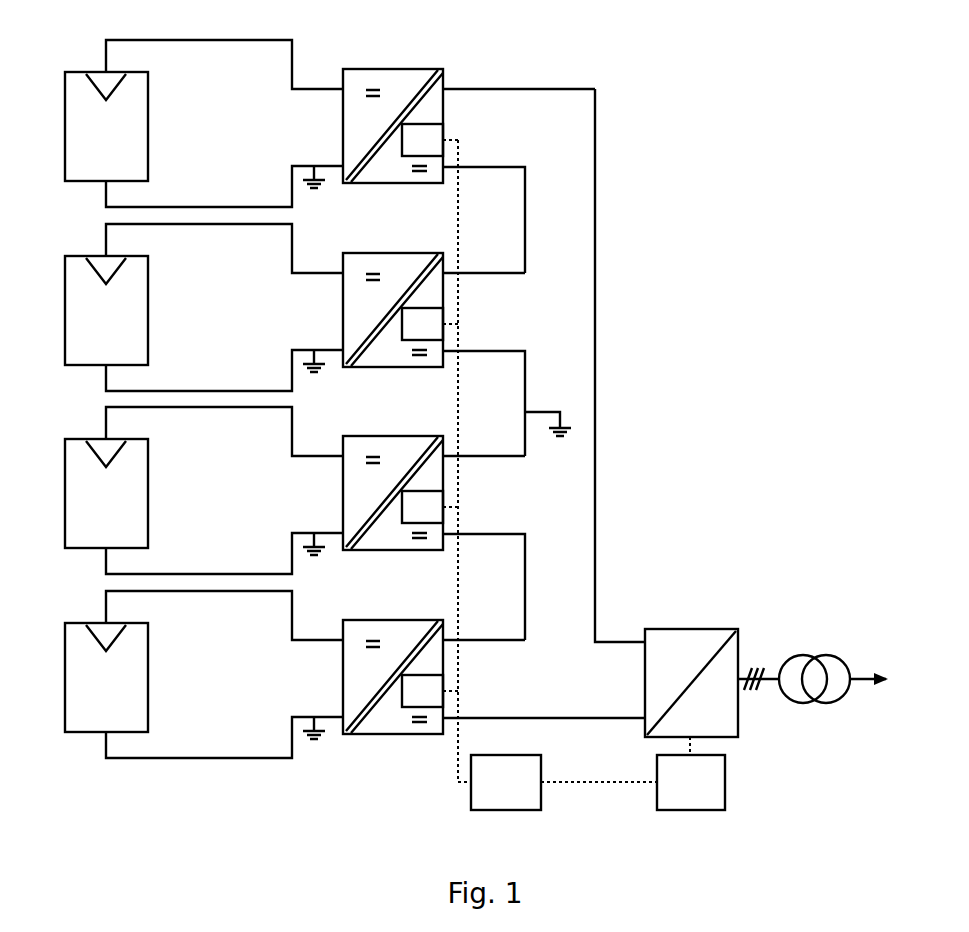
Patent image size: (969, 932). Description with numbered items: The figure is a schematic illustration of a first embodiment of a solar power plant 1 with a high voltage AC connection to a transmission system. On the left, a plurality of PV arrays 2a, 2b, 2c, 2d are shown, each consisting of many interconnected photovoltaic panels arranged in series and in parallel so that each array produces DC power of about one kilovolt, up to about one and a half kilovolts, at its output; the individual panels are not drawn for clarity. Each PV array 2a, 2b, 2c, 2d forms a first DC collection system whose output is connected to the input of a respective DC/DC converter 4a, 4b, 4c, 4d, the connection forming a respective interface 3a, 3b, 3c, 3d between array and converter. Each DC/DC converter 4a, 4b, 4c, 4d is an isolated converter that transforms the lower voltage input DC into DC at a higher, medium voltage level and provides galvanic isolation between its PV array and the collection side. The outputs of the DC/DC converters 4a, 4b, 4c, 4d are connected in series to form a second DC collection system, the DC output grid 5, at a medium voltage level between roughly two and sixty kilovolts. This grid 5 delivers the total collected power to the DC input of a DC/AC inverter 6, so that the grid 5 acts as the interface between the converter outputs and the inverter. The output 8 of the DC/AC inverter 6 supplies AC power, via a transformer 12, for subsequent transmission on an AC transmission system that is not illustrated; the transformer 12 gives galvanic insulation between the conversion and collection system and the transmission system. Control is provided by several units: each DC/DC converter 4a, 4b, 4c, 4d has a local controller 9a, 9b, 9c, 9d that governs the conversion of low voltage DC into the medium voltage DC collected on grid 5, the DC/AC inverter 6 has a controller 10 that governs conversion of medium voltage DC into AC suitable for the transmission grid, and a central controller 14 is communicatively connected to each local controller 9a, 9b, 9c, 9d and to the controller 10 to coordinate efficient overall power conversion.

The solar power plant 1 is at (608, 46).
The PV array 2a is at (84, 126).
The PV array 2b is at (83, 310).
The PV array 2c is at (84, 493).
The PV array 2d is at (83, 677).
The interface 3a is at (292, 59).
The interface 3b is at (292, 243).
The interface 3c is at (292, 426).
The interface 3d is at (292, 610).
The DC/DC converter 4a is at (396, 80).
The DC/DC converter 4b is at (396, 264).
The DC/DC converter 4c is at (396, 447).
The DC/DC converter 4d is at (396, 631).
The DC output grid 5 is at (596, 330).
The DC/AC inverter 6 is at (675, 634).
The output 8 is at (771, 672).
The controller 9a is at (430, 140).
The controller 9b is at (430, 324).
The controller 9c is at (430, 507).
The controller 9d is at (430, 691).
The controller 10 is at (691, 773).
The transformer 12 is at (834, 686).
The central controller 14 is at (557, 475).